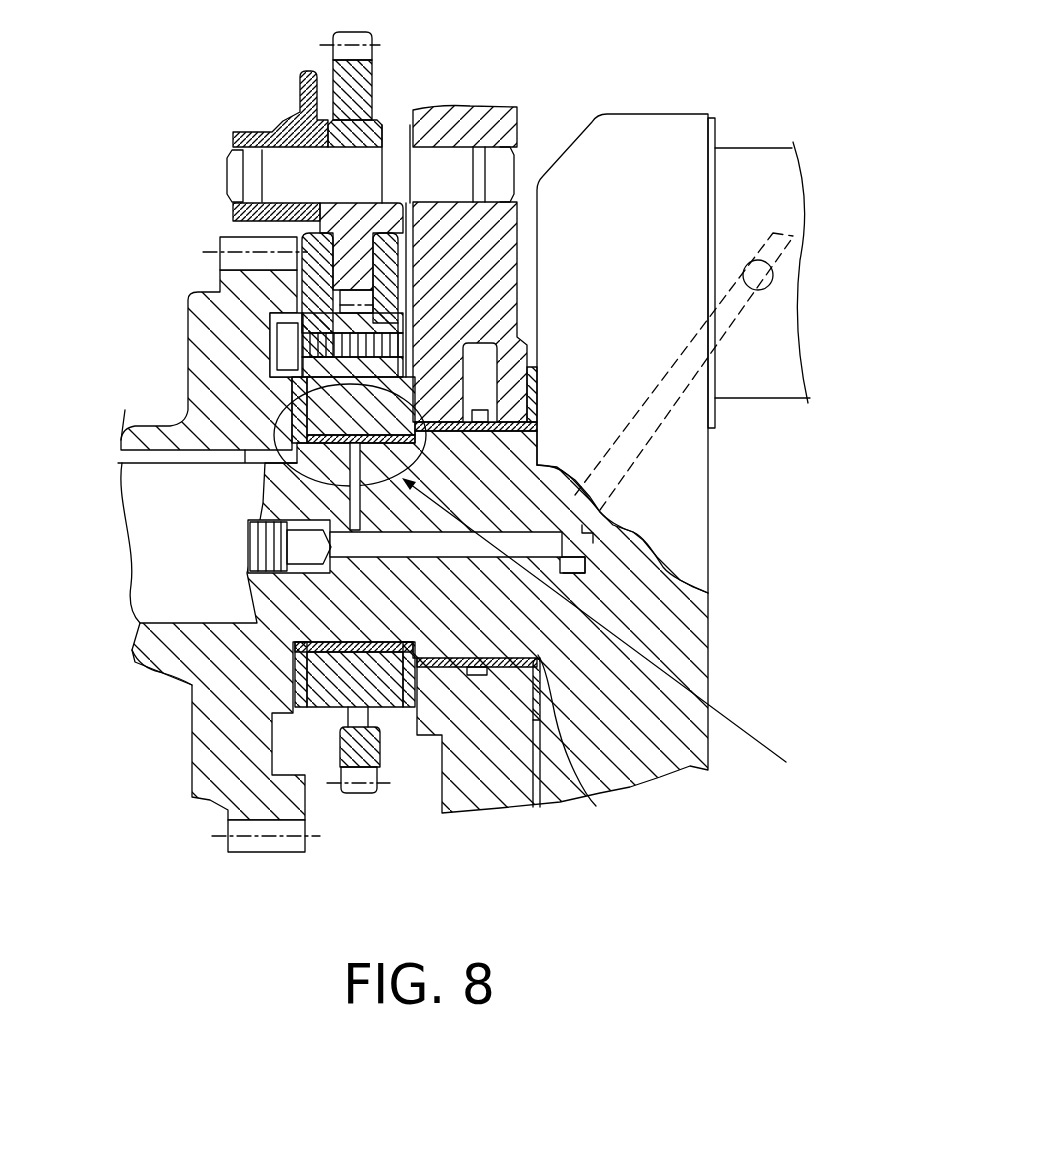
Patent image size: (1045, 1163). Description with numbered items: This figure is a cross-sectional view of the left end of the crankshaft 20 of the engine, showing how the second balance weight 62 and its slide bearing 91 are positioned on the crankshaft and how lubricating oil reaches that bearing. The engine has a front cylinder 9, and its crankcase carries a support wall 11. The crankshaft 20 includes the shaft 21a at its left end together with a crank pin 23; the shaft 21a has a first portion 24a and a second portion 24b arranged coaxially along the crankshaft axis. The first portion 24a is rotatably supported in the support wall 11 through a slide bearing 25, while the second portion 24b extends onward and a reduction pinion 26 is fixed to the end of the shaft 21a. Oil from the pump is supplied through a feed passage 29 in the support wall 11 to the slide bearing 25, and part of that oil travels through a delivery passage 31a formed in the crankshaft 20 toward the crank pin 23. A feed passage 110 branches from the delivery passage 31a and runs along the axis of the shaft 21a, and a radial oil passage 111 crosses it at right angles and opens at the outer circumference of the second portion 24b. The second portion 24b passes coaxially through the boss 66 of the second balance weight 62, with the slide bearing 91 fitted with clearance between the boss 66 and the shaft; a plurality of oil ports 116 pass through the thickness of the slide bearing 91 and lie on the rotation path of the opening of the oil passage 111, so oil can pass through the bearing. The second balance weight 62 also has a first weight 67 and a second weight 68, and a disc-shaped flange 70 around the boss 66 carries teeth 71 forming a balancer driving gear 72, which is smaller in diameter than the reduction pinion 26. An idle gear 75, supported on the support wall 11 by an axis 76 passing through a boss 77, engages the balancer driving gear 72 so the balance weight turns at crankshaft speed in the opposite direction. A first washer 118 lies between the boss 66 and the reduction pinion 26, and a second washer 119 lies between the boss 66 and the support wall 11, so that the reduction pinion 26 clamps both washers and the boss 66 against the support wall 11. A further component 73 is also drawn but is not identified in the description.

The front cylinder 9 is at (604, 625).
The support wall 11 is at (482, 123).
The crankshaft 20 is at (689, 97).
The shaft 21a is at (152, 540).
The crank pin 23 is at (768, 160).
The first portion 24a is at (497, 437).
The second portion 24b is at (330, 633).
The slide bearing 25 is at (420, 626).
The reduction pinion 26 is at (235, 783).
The feed passage 29 is at (480, 383).
The delivery passage 31a is at (545, 575).
The second balance weight 62 is at (384, 231).
The boss 66 is at (320, 372).
The first weight 67 is at (307, 240).
The second weight 68 is at (388, 233).
The flange 70 is at (340, 737).
The teeth 71 is at (360, 793).
The balancer driving gear 72 is at (300, 283).
The bearing 73 is at (323, 343).
The idle gear 75 is at (347, 41).
The axis 76 is at (273, 160).
The boss 77 is at (262, 210).
The slide bearing 91 is at (193, 685).
The feed passage 110 is at (600, 511).
The oil passage 111 is at (283, 543).
The oil ports 116 is at (297, 480).
The first washer 118 is at (205, 398).
The second washer 119 is at (408, 713).